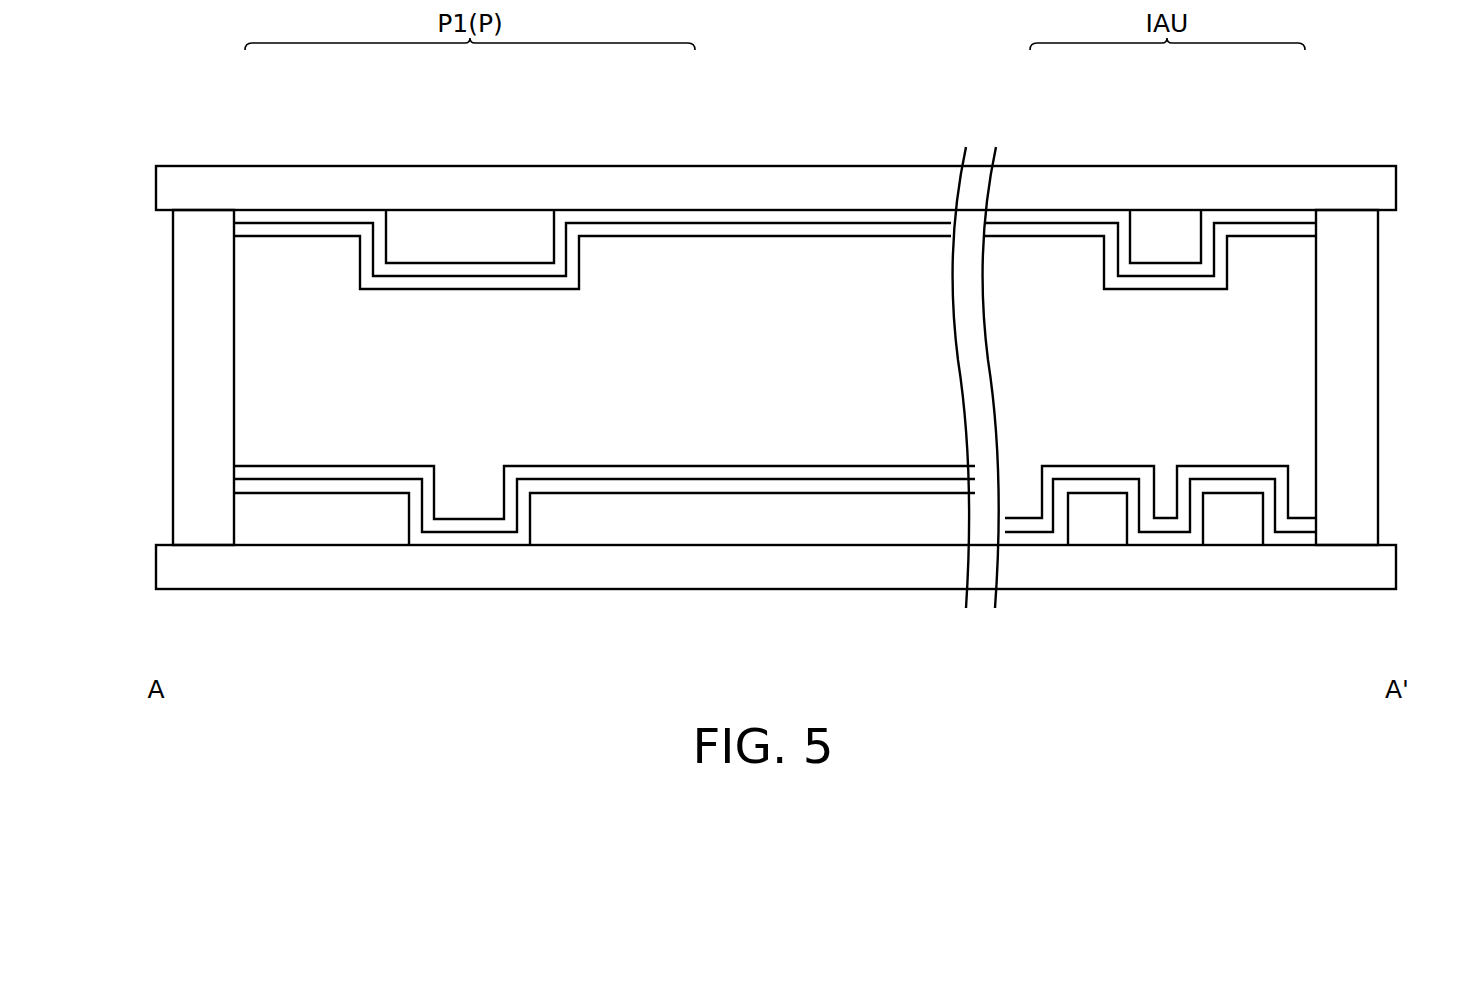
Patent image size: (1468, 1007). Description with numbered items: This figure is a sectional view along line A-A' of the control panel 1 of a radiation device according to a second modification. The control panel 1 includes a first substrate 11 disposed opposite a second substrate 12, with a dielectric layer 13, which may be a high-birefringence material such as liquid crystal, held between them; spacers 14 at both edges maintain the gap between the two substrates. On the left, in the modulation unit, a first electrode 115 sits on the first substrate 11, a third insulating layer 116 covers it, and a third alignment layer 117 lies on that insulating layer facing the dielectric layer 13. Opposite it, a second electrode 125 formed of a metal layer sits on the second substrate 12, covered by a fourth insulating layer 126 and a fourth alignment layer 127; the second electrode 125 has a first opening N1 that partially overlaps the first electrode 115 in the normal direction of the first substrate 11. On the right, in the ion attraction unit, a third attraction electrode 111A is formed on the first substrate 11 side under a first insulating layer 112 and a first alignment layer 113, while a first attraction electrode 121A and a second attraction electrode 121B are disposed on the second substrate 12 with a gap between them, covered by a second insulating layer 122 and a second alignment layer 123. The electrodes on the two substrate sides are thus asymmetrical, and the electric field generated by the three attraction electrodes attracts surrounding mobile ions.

The control panel 1 is at (82, 81).
The first substrate 11 is at (162, 188).
The second substrate 12 is at (162, 558).
The dielectric layer 13 is at (797, 320).
The spacers 14 is at (182, 373).
The third attraction electrode 111A is at (1165, 232).
The first insulating layer 112 is at (1238, 217).
The first alignment layer 113 is at (1293, 230).
The first electrode 115 is at (470, 240).
The third insulating layer 116 is at (273, 215).
The third alignment layer 117 is at (337, 230).
The first attraction electrode 121A is at (1097, 523).
The second attraction electrode 121B is at (1233, 520).
The second insulating layer 122 is at (1300, 537).
The second alignment layer 123 is at (1305, 523).
The second electrode 125 is at (331, 513).
The fourth insulating layer 126 is at (744, 487).
The fourth alignment layer 127 is at (808, 473).
The first opening N1 is at (470, 502).